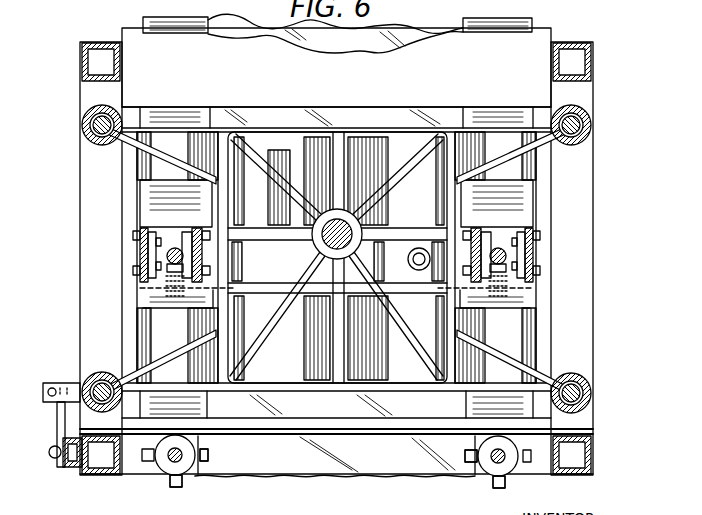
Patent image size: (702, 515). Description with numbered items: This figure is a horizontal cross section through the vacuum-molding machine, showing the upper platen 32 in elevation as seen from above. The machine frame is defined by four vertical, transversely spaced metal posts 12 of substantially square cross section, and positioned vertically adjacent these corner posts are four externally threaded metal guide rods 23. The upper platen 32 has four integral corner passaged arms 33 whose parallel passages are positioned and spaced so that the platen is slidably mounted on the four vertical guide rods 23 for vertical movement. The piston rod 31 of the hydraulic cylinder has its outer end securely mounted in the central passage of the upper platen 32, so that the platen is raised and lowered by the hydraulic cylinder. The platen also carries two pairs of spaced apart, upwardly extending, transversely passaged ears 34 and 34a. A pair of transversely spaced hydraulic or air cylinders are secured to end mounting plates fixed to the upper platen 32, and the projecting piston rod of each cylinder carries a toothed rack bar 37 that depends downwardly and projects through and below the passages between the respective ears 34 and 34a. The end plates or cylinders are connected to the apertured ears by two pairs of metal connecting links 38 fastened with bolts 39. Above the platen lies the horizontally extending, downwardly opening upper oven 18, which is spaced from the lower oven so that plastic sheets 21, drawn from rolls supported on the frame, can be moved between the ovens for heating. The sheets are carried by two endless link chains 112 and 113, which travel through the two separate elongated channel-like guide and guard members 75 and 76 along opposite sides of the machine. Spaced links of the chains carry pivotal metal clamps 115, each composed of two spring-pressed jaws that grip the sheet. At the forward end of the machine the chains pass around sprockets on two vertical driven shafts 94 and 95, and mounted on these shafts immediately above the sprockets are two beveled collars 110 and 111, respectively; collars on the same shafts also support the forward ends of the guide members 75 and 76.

The vertical posts 12 is at (80, 62).
The upper oven 18 is at (353, 94).
The plastic sheets 21 is at (298, 466).
The guide rods 23 is at (83, 125).
The piston rod 31 is at (352, 232).
The upper platen 32 is at (337, 226).
The corner passaged arms 33 is at (150, 165).
The passaged ears 34 is at (140, 258).
The passaged ears 34a is at (218, 262).
The toothed rack bar 37 is at (176, 248).
The connecting links 38 is at (146, 256).
The bolts 39 is at (137, 233).
The chain guide and guard member 75 is at (150, 20).
The chain guide and guard member 76 is at (530, 20).
The vertical driven shaft 94 is at (168, 465).
The vertical driven shaft 95 is at (494, 464).
The beveled collar 110 is at (196, 478).
The beveled collar 111 is at (511, 468).
The endless link chain 112 is at (206, 465).
The endless link chain 113 is at (465, 456).
The pivotal clamps 115 is at (214, 474).